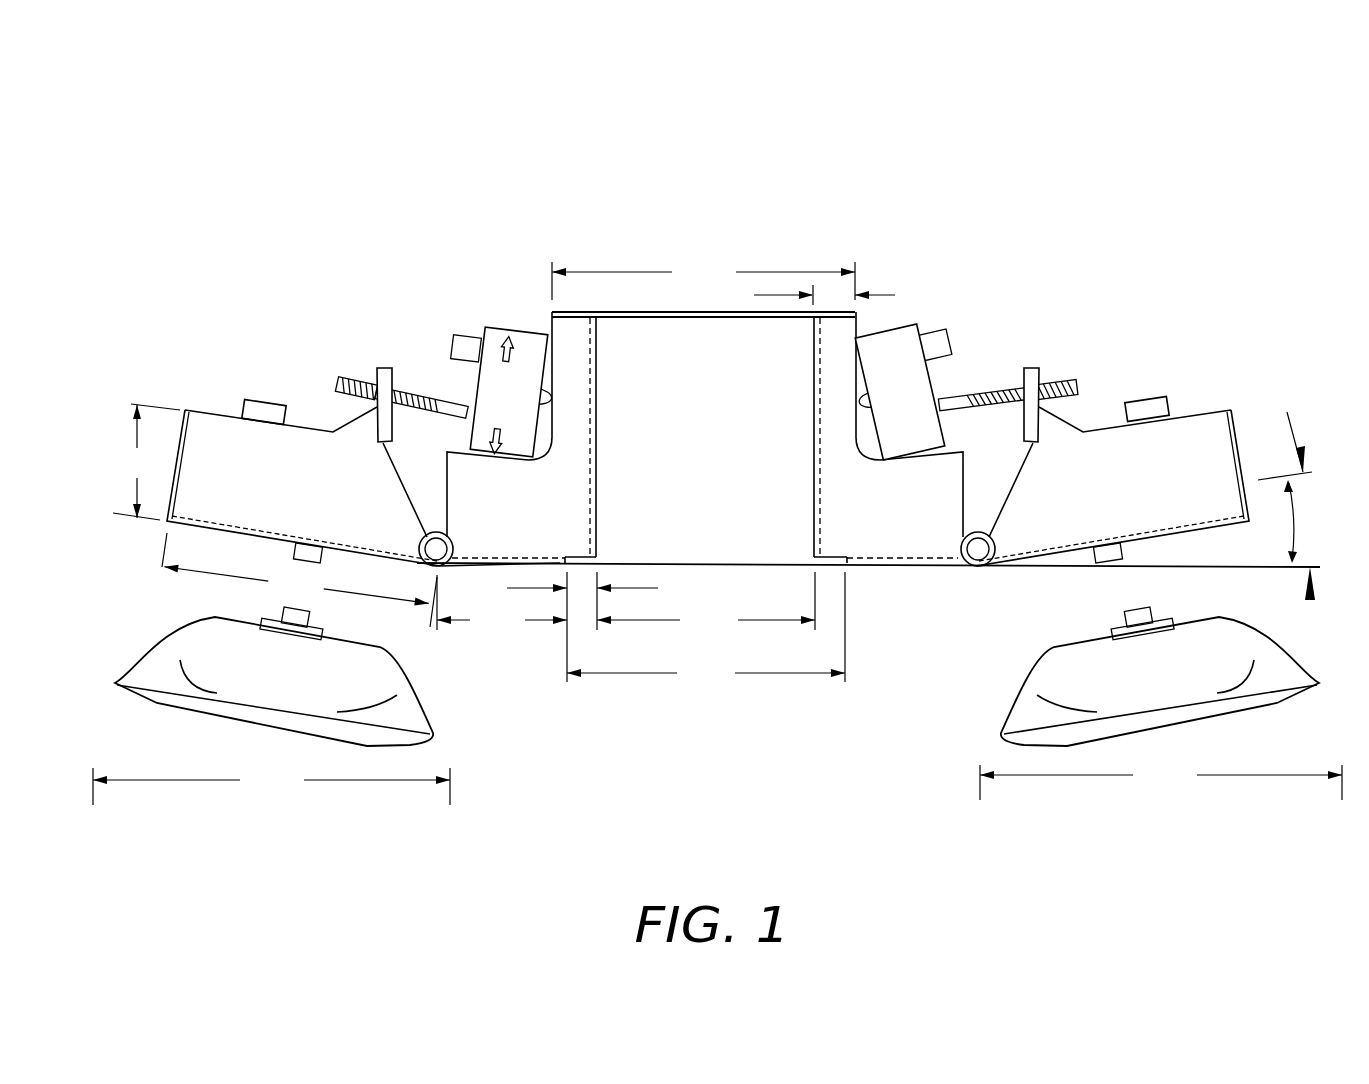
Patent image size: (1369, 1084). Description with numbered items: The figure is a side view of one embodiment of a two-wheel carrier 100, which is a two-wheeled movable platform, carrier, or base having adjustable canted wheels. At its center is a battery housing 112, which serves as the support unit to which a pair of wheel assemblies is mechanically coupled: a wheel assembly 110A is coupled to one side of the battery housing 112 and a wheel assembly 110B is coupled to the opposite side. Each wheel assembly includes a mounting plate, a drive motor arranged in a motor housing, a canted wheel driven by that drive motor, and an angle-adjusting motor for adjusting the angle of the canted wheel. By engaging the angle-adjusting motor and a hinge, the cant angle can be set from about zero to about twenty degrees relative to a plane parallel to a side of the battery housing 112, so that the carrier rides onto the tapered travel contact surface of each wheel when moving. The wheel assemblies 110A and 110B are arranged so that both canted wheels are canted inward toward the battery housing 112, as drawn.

The two-wheel carrier 100 is at (427, 118).
The wheel assembly 110A is at (1178, 252).
The wheel assembly 110B is at (255, 252).
The battery housing 112 is at (868, 439).